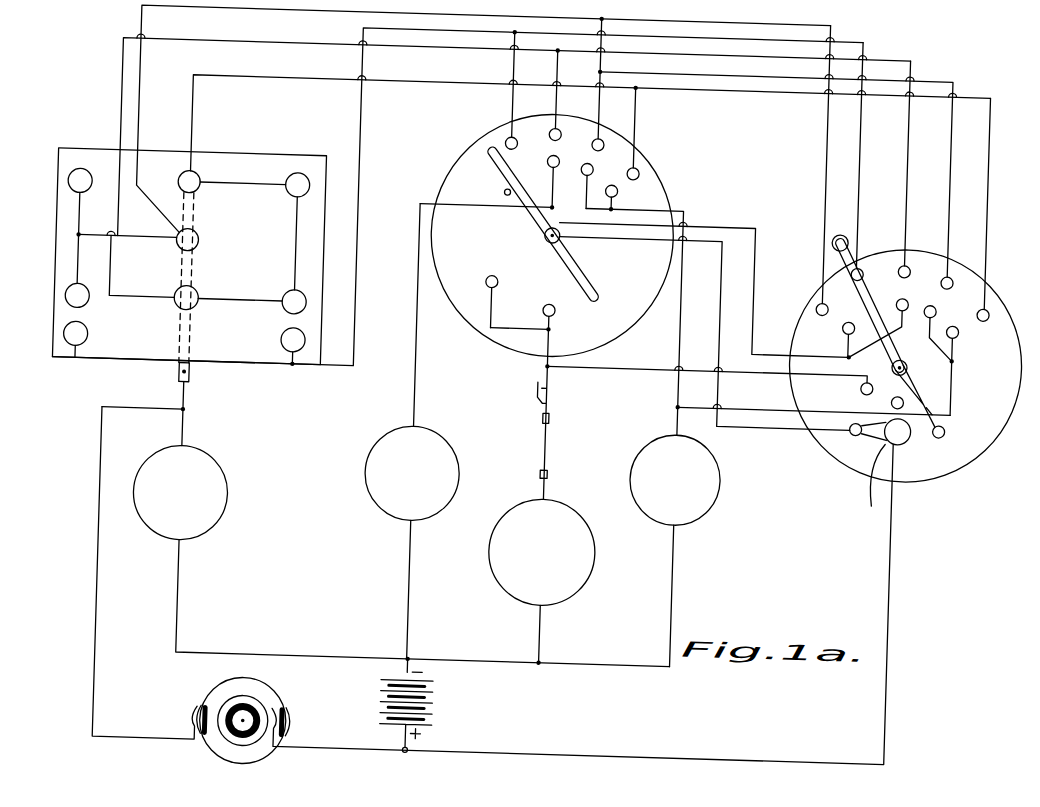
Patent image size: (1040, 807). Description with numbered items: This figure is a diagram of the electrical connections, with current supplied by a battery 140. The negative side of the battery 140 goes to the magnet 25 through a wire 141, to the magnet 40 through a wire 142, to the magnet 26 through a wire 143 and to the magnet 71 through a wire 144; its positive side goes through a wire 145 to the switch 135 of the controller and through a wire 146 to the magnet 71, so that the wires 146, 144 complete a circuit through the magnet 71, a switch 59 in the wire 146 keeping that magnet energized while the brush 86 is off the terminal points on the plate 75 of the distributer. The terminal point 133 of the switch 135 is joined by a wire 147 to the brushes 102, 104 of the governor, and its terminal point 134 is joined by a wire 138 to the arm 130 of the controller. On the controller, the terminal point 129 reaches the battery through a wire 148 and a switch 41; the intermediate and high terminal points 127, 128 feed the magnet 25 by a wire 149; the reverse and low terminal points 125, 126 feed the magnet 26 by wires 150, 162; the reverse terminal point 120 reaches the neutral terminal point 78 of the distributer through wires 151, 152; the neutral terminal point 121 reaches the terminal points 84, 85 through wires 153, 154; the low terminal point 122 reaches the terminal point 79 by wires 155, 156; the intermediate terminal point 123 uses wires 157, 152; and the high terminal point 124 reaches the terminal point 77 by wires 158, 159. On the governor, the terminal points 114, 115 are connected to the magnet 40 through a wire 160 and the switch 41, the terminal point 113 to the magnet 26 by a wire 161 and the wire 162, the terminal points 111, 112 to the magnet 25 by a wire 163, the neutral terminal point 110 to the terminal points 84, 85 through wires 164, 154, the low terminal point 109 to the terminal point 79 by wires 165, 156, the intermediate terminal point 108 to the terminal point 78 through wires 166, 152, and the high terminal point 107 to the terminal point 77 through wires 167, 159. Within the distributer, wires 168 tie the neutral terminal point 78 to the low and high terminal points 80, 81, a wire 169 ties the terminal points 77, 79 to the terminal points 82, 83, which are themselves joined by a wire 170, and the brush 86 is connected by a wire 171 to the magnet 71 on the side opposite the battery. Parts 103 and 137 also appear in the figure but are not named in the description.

The magnet 25 is at (675, 480).
The magnet 26 is at (412, 473).
The magnet 40 is at (541, 552).
The switch 41 is at (562, 387).
The switch 59 is at (291, 689).
The magnet 71 is at (180, 492).
The plate of the distributer 75 is at (267, 144).
The neutral terminal point of the distributer 77 is at (202, 161).
The neutral terminal point of the distributer 78 is at (205, 224).
The terminal point of the distributer 79 is at (186, 285).
The low terminal point 80 is at (88, 165).
The high terminal point 81 is at (76, 285).
The terminal point 82 is at (307, 164).
The terminal point 83 is at (294, 285).
The terminal point of the distributer 84 is at (98, 328).
The terminal point of the distributer 85 is at (291, 334).
The brush of the distributer 86 is at (201, 367).
The brush of the governor 102 is at (508, 158).
The pointer pivot stud 103 is at (510, 178).
The brush of the governor 104 is at (596, 252).
The high terminal point of the governor 107 is at (644, 146).
The intermediate terminal point of the governor 108 is at (606, 120).
The low terminal point of the governor 109 is at (563, 112).
The neutral terminal point of the governor 110 is at (517, 121).
The terminal point 111 is at (623, 173).
The terminal point 112 is at (633, 152).
The terminal point 113 is at (588, 147).
The terminal point 114 is at (564, 294).
The terminal point 115 is at (505, 263).
The reverse terminal point of the controller 120 is at (826, 278).
The neutral terminal point of the controller 121 is at (870, 242).
The low terminal point of the controller 122 is at (915, 238).
The intermediate terminal point of the controller 123 is at (958, 250).
The high terminal point of the controller 124 is at (996, 279).
The reverse terminal point 125 is at (853, 306).
The low terminal point 126 is at (885, 315).
The intermediate terminal point 127 is at (946, 284).
The high terminal point 128 is at (966, 309).
The terminal point of the controller 129 is at (903, 376).
The arm of the controller 130 is at (865, 249).
The terminal point of the switch 133 is at (865, 412).
The terminal point of the switch 134 is at (957, 404).
The switch of the controller 135 is at (861, 486).
The contact disc 137 is at (913, 416).
The wire 138 is at (937, 377).
The battery 140 is at (451, 690).
The wire 141 is at (690, 562).
The wire 142 is at (558, 607).
The wire 143 is at (427, 588).
The wire 144 is at (197, 580).
The wire 145 is at (905, 650).
The wire 146 is at (114, 588).
The wire 147 is at (728, 271).
The wire 148 is at (648, 349).
The wire 149 is at (754, 386).
The wire 150 is at (768, 230).
The wire 151 is at (827, 152).
The wire 152 is at (240, 5).
The wire 153 is at (879, 162).
The wire 154 is at (371, 136).
The wire 155 is at (926, 165).
The wire 156 is at (283, 38).
The wire 157 is at (951, 124).
The wire 158 is at (993, 182).
The wire 159 is at (190, 104).
The wire 160 is at (518, 312).
The wire 161 is at (552, 145).
The wire 162 is at (426, 272).
The wire 163 is at (690, 291).
The wire 164 is at (511, 95).
The wire 165 is at (557, 52).
The wire 166 is at (602, 82).
The wire 167 is at (668, 75).
The wires 168 is at (107, 237).
The wire 169 is at (243, 183).
The wire 170 is at (301, 229).
The wire 171 is at (197, 403).